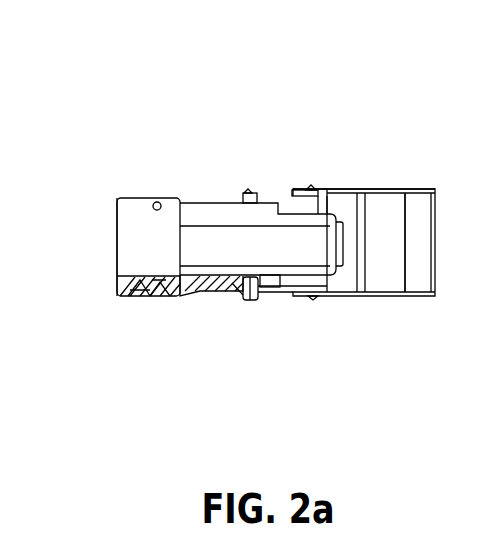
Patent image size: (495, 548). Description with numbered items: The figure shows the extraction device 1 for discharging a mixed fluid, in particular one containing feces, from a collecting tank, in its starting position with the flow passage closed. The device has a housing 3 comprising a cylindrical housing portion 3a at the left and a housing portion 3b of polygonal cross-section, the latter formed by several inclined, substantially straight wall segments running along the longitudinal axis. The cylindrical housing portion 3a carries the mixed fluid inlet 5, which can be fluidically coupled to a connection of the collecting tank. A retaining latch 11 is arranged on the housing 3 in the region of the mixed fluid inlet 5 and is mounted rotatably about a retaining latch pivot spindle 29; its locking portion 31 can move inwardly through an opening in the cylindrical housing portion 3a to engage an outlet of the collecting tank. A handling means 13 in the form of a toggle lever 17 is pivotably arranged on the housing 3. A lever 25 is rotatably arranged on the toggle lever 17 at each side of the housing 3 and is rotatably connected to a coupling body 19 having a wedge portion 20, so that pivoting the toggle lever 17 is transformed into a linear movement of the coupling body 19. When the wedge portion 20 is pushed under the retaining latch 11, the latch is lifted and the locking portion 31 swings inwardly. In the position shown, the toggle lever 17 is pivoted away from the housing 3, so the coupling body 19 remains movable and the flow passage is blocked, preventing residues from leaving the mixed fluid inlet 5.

The extraction device 1 is at (421, 106).
The housing 3 is at (178, 162).
The cylindrical housing portion 3a is at (128, 232).
The housing portion of polygonal cross-section 3b is at (218, 243).
The mixed fluid inlet 5 is at (100, 215).
The retaining latch 11 is at (182, 325).
The handling means 13 is at (381, 150).
The toggle lever 17 is at (418, 282).
The coupling body 19 is at (246, 298).
The wedge portion 20 is at (213, 292).
The lever 25 is at (280, 196).
The retaining latch pivot spindle 29 is at (154, 197).
The locking portion 31 is at (146, 298).